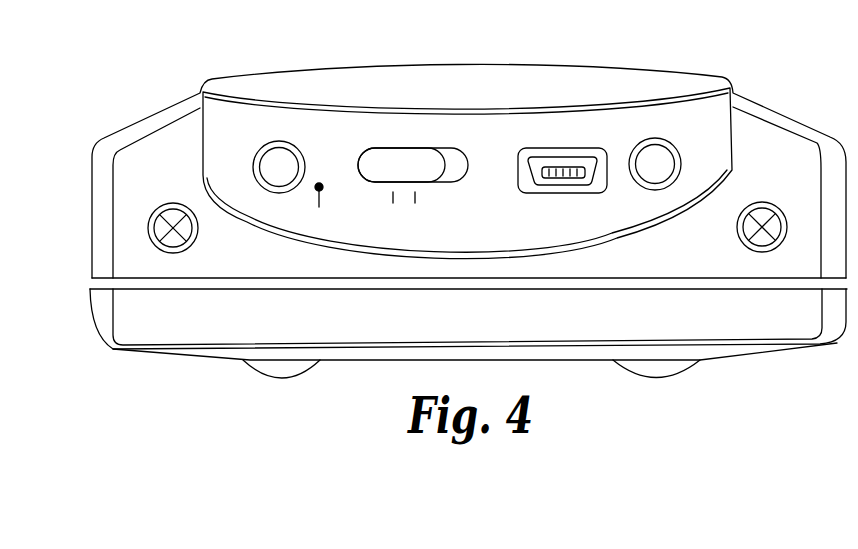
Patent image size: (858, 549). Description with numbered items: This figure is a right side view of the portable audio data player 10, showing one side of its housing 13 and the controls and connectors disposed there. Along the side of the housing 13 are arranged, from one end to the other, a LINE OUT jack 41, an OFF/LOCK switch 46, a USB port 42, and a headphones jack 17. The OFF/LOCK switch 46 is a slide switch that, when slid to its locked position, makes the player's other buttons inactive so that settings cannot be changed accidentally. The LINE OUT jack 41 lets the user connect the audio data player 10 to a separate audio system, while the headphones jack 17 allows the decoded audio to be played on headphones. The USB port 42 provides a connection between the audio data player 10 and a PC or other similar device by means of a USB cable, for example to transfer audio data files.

The audio data player 10 is at (807, 122).
The housing 13 is at (703, 72).
The headphones jack 17 is at (655, 138).
The LINE OUT jack 41 is at (257, 152).
The USB port 42 is at (562, 148).
The OFF/LOCK switch 46 is at (385, 148).